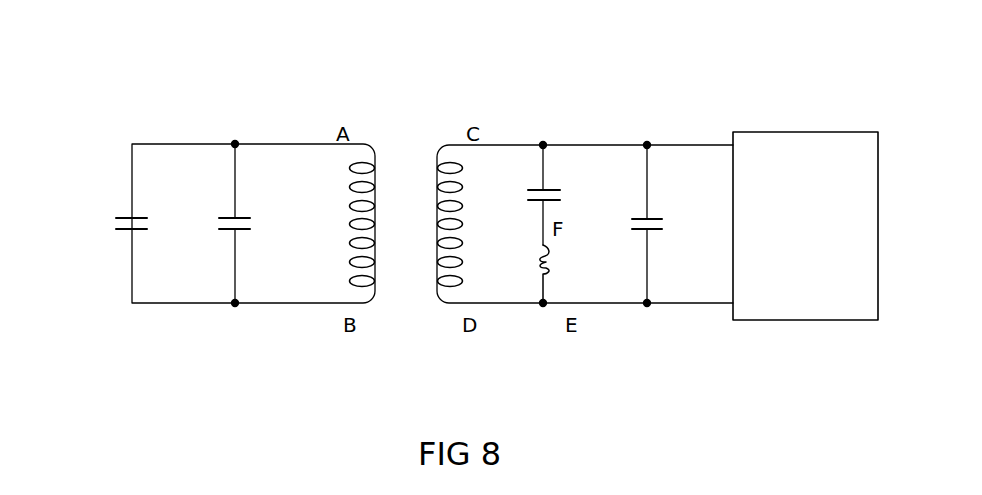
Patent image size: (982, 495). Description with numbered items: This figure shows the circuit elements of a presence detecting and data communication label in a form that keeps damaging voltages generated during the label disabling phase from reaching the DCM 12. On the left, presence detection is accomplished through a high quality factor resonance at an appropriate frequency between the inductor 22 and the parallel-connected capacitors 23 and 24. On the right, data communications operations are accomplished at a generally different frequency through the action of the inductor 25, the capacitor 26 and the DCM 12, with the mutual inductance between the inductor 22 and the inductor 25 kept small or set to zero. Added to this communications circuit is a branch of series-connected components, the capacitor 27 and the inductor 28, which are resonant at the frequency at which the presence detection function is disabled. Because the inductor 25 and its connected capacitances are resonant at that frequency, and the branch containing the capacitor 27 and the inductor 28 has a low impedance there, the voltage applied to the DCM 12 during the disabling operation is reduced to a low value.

The DCM 12 is at (795, 132).
The inductor 22 is at (352, 207).
The capacitor 23 is at (125, 218).
The capacitor 24 is at (228, 218).
The inductor 25 is at (458, 207).
The capacitor 26 is at (655, 218).
The capacitor 27 is at (553, 188).
The inductor 28 is at (548, 265).